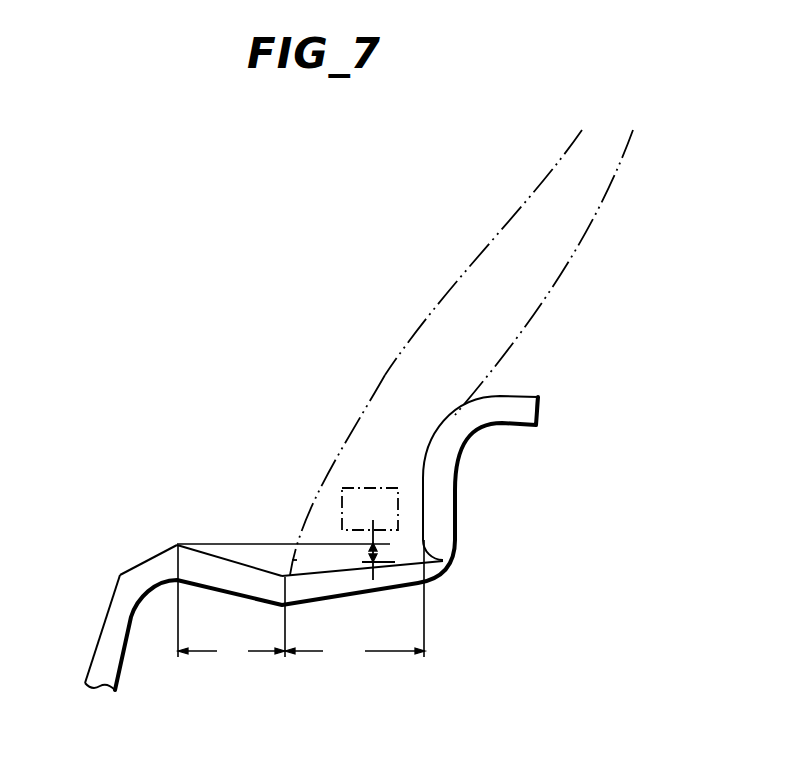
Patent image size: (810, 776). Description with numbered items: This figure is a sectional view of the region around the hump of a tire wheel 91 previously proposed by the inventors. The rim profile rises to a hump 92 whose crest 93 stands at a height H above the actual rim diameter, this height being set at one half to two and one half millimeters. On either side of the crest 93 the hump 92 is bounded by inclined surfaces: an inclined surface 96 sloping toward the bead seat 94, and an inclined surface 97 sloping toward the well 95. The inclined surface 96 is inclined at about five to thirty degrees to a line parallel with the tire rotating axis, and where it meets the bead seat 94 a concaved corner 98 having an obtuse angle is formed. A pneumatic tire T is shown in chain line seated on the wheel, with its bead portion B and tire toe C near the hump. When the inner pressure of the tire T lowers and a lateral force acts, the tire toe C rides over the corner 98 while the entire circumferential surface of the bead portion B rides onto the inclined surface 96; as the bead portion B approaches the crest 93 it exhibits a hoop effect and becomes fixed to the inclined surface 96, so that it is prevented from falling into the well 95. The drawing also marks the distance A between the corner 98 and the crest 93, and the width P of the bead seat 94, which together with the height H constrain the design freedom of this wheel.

The tire wheel 91 is at (442, 573).
The hump 92 is at (155, 535).
The crest 93 is at (177, 546).
The bead seat 94 is at (326, 569).
The well 95 is at (88, 664).
The inclined surface 96 is at (228, 560).
The inclined surface 97 is at (131, 570).
The concaved corner 98 is at (280, 574).
The pneumatic tire T is at (488, 268).
The bead portion B is at (323, 498).
The height H is at (363, 547).
The tire toe C is at (293, 571).
The distance A is at (231, 651).
The width P is at (355, 603).